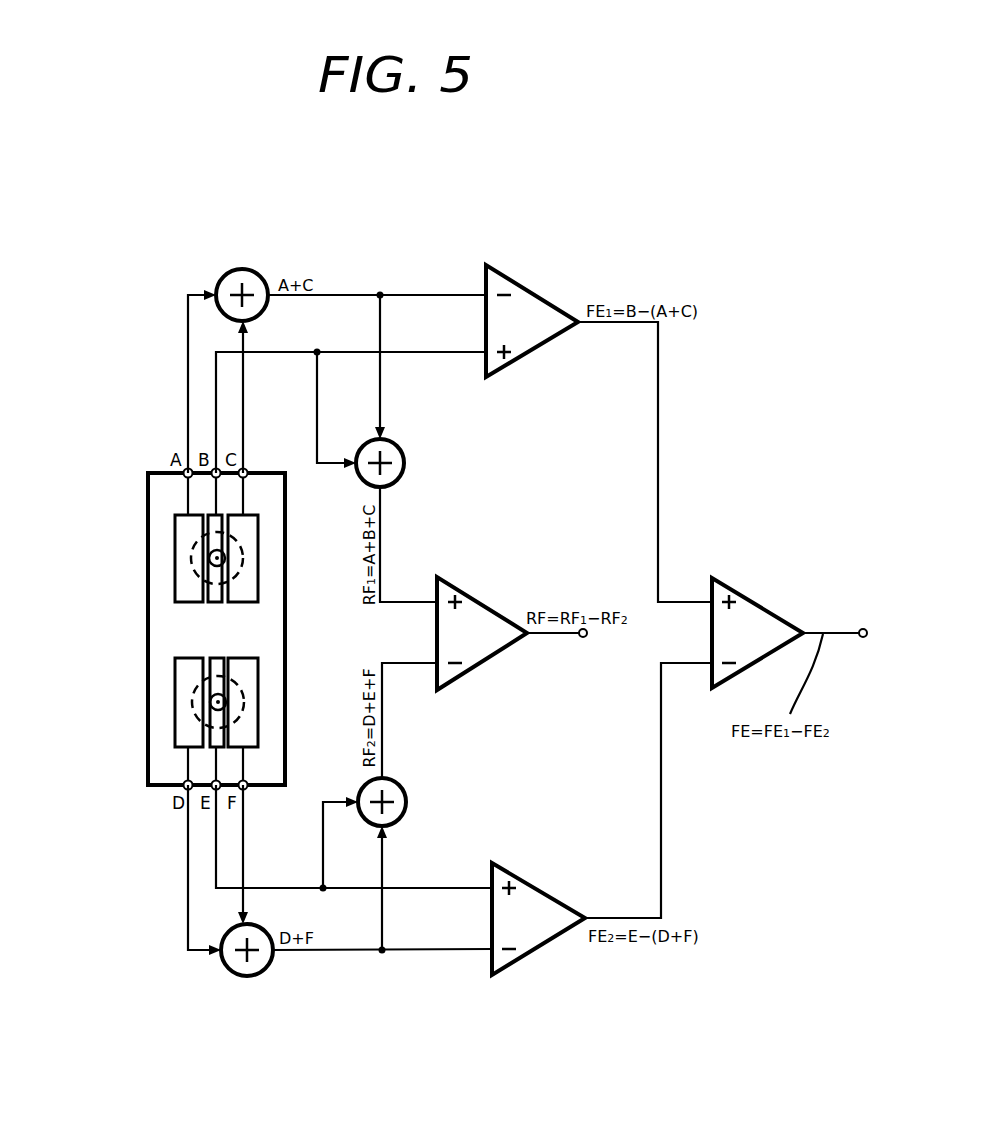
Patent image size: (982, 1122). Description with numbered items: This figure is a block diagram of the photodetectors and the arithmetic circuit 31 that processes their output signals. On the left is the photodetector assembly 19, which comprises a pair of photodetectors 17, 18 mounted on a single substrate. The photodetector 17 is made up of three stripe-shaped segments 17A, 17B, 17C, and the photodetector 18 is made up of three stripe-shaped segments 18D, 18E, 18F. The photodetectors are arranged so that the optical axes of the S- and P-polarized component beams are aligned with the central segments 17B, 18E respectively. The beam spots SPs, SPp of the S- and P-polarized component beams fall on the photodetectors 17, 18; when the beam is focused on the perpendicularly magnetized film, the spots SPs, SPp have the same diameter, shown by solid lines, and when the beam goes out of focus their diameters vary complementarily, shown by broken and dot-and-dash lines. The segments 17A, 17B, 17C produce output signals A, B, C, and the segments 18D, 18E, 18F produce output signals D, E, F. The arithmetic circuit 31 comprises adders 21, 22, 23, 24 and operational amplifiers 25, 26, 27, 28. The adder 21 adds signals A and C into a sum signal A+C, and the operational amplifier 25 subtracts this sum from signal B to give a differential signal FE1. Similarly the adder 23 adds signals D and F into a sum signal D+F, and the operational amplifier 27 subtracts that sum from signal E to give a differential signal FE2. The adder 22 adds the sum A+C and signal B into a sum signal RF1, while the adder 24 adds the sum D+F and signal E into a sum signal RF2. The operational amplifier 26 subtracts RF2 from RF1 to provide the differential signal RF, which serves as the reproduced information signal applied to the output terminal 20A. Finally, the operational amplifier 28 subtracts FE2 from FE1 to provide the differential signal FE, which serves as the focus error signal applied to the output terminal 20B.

The photodetector 17 is at (149, 537).
The stripe-shaped segment 17A is at (185, 555).
The stripe-shaped segment 17B is at (208, 535).
The stripe-shaped segment 17C is at (240, 515).
The photodetector 18 is at (150, 722).
The stripe-shaped segment 18D is at (190, 728).
The stripe-shaped segment 18E is at (212, 740).
The stripe-shaped segment 18F is at (243, 740).
The photodetector assembly 19 is at (272, 630).
The beam spot of S-polarized component beam SPs is at (203, 578).
The beam spot of P-polarized component beam SPp is at (207, 690).
The output terminal 20A is at (584, 638).
The output terminal 20B is at (864, 638).
The adder 21 is at (228, 273).
The adder 22 is at (405, 463).
The adder 23 is at (246, 977).
The adder 24 is at (407, 802).
The operational amplifier 25 is at (523, 284).
The operational amplifier 26 is at (487, 605).
The operational amplifier 27 is at (545, 893).
The operational amplifier 28 is at (762, 607).
The arithmetic circuit 31 is at (602, 250).